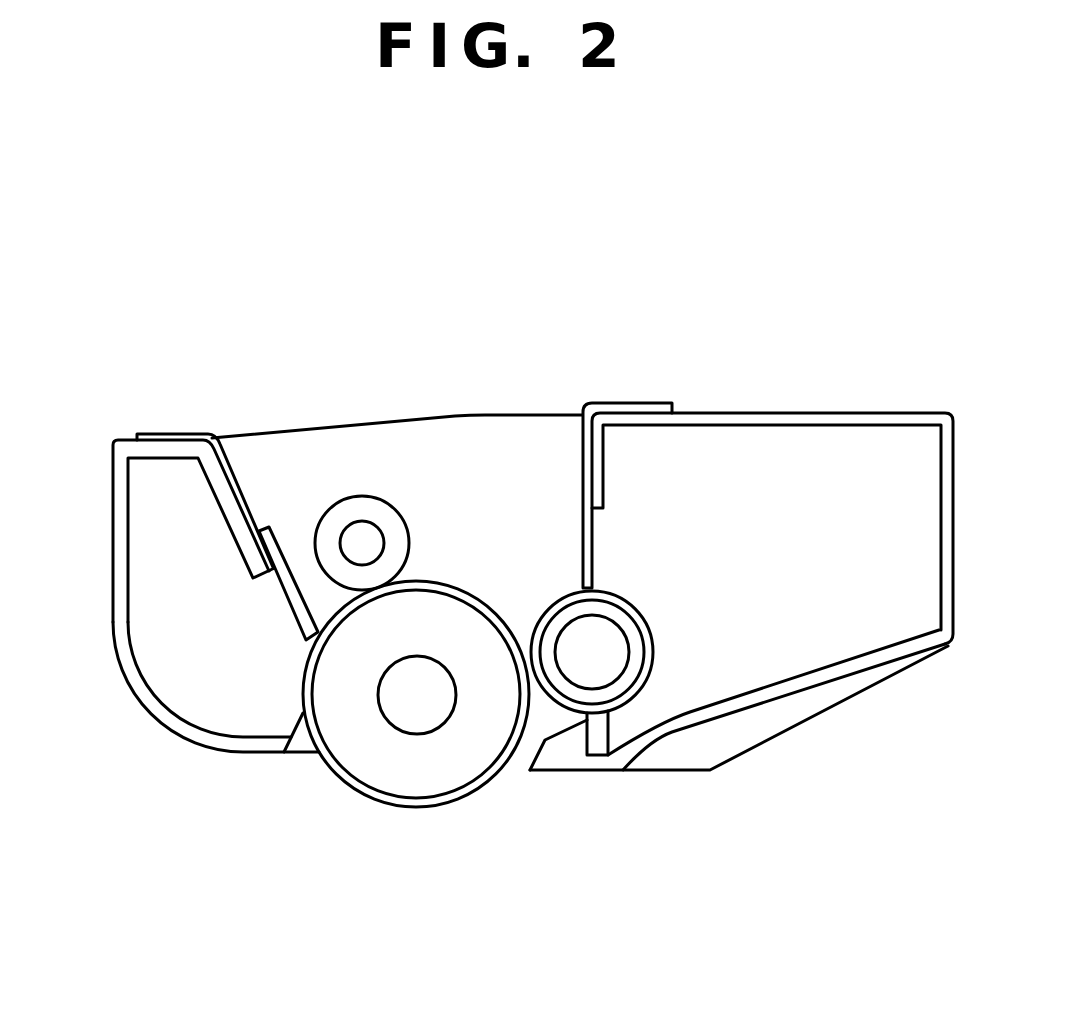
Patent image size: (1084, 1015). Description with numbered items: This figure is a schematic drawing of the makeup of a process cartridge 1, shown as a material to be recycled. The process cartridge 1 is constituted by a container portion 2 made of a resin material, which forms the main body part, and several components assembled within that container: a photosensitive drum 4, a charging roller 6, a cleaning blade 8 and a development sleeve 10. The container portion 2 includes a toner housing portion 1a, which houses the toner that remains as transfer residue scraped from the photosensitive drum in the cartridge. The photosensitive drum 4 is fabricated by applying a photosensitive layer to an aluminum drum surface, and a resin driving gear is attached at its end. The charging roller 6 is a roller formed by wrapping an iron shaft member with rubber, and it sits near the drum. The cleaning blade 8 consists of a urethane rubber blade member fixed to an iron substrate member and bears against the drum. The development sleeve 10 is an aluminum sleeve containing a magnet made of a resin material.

The process cartridge 1 is at (608, 279).
The toner housing portion 1a is at (143, 633).
The container portion 2 is at (860, 412).
The photosensitive drum 4 is at (418, 800).
The charging roller 6 is at (365, 495).
The cleaning blade 8 is at (295, 605).
The development sleeve 10 is at (608, 698).